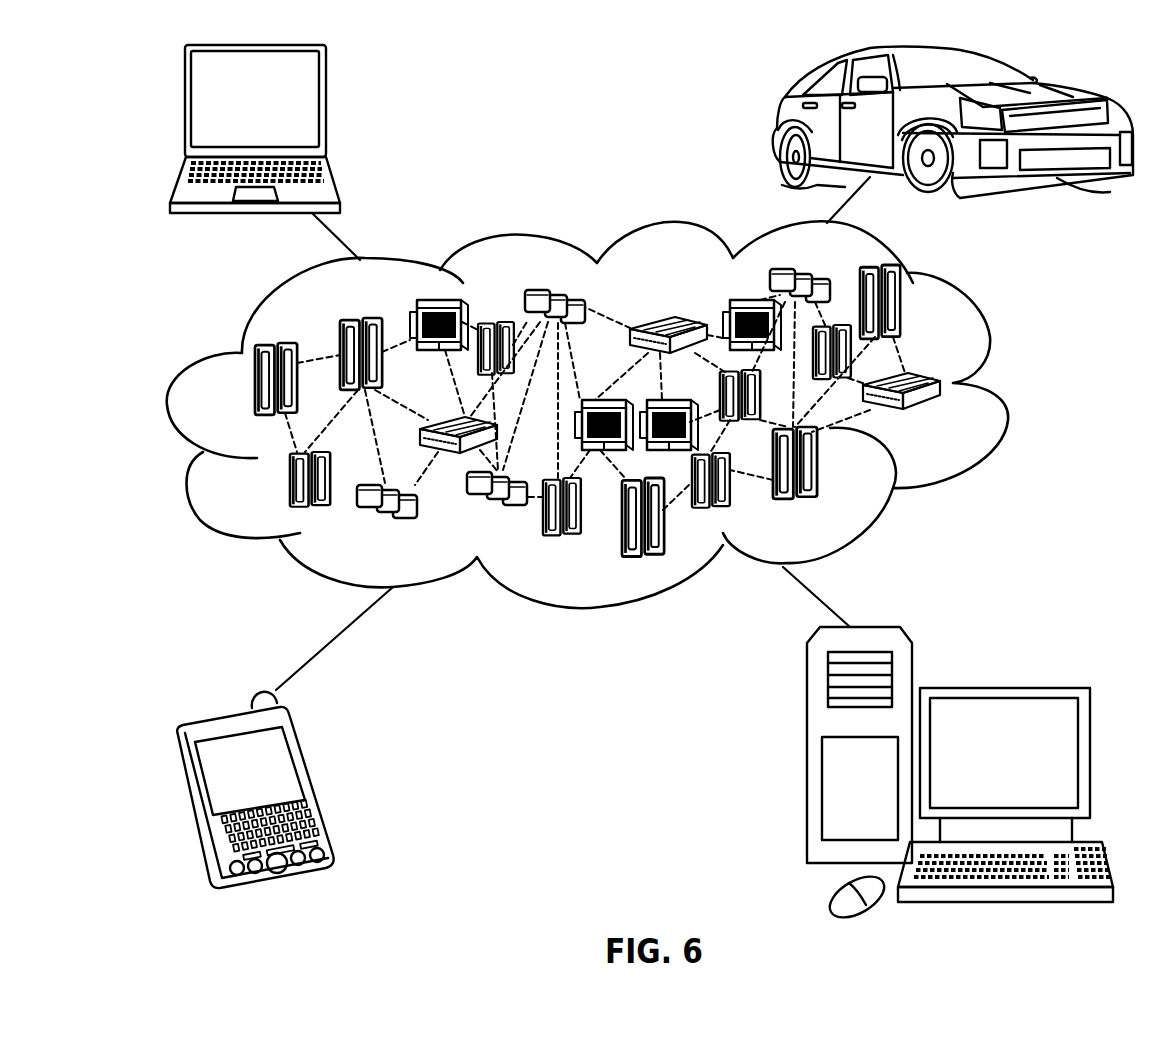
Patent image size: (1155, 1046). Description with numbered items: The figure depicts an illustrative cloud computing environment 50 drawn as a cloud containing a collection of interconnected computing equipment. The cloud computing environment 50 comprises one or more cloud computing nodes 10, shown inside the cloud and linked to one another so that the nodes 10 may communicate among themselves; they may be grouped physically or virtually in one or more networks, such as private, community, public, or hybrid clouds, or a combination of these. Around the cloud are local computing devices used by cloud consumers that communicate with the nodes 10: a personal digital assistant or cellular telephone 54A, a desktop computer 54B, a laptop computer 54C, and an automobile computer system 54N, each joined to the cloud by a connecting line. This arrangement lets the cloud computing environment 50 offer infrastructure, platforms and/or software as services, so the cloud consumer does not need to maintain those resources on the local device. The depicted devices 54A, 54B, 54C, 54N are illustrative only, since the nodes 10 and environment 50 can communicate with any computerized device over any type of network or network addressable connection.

The cloud computing node 10 is at (950, 422).
The cloud computing environment 50 is at (1002, 387).
The personal digital assistant (PDA) or cellular telephone 54A is at (312, 782).
The desktop computer 54B is at (1003, 688).
The laptop computer 54C is at (326, 110).
The automobile computer system 54N is at (776, 125).